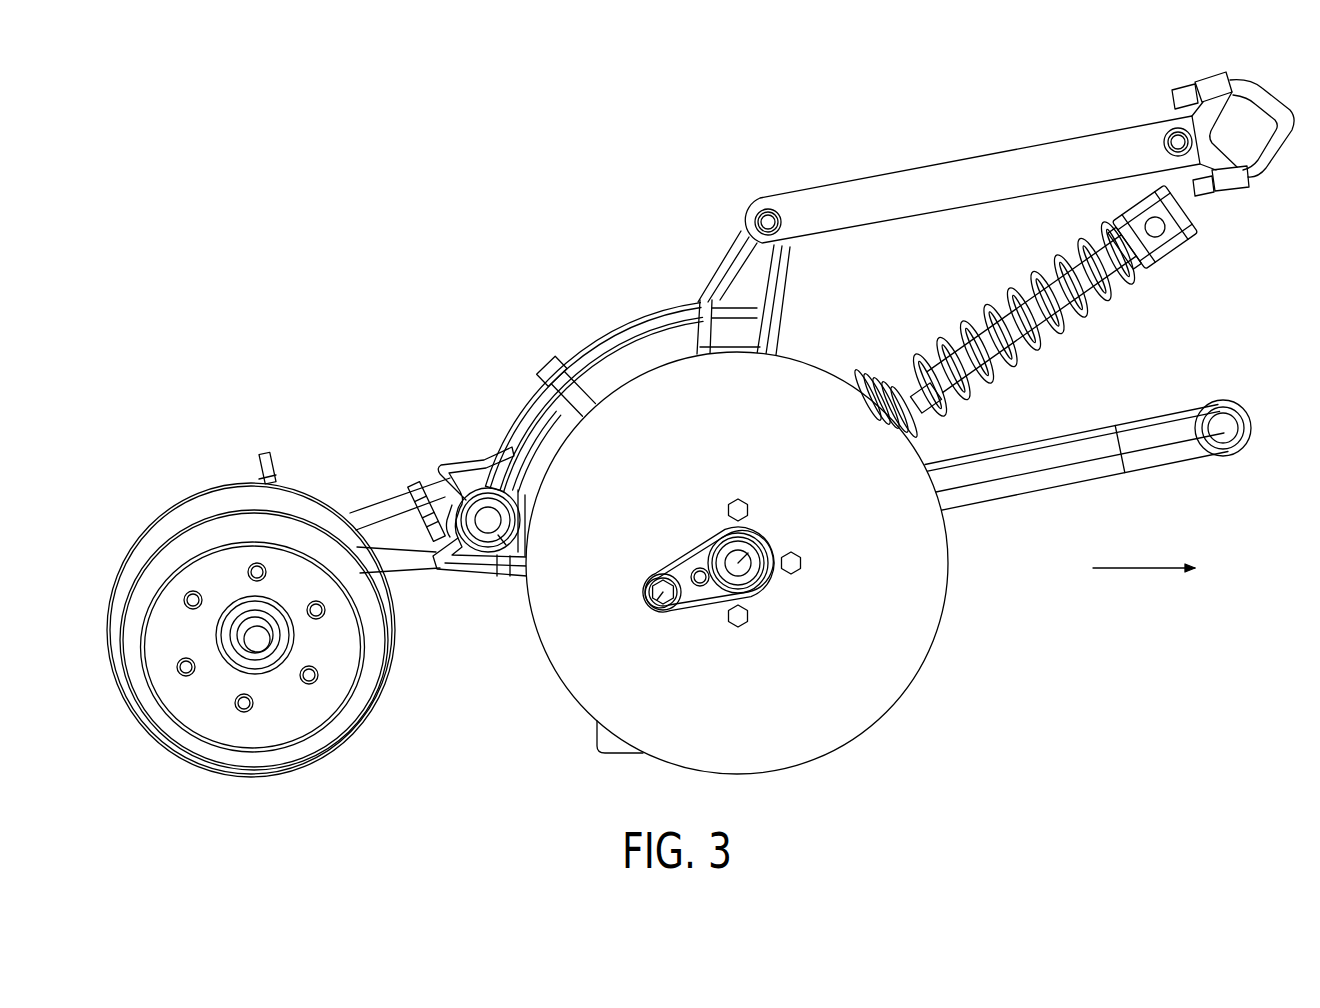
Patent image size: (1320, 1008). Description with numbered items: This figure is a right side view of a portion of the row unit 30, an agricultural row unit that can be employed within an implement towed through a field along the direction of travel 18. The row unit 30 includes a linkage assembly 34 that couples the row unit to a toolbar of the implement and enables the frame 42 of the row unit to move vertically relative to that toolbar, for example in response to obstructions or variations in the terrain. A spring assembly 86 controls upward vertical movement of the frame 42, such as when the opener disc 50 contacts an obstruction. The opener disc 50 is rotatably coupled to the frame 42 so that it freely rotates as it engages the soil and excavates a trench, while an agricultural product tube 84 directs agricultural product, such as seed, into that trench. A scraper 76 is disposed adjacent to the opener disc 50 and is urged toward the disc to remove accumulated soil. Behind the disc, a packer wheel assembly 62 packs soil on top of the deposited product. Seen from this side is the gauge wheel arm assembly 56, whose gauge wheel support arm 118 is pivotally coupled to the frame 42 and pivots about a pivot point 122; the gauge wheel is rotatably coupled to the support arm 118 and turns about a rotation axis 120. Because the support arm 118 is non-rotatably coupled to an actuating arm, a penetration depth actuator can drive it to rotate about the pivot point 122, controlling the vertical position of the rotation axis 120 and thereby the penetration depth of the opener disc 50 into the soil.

The direction of travel 18 is at (1138, 567).
The row unit 30 is at (540, 292).
The linkage assembly 34 is at (968, 112).
The frame 42 is at (638, 325).
The opener disc 50 is at (935, 640).
The gauge wheel arm assembly 56 is at (674, 546).
The packer wheel assembly 62 is at (278, 418).
The scraper 76 is at (618, 748).
The agricultural product tube 84 is at (552, 393).
The spring assembly 86 is at (1056, 343).
The gauge wheel support arm 118 is at (683, 565).
The rotation axis 120 is at (660, 598).
The pivot point 122 is at (742, 565).